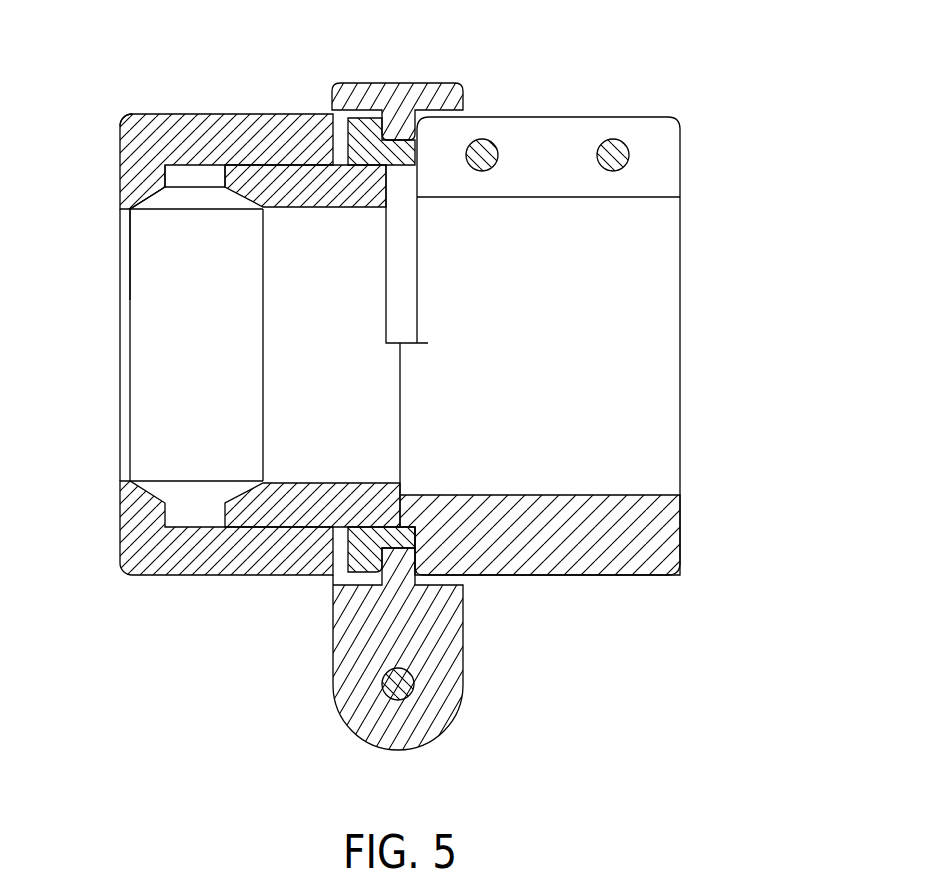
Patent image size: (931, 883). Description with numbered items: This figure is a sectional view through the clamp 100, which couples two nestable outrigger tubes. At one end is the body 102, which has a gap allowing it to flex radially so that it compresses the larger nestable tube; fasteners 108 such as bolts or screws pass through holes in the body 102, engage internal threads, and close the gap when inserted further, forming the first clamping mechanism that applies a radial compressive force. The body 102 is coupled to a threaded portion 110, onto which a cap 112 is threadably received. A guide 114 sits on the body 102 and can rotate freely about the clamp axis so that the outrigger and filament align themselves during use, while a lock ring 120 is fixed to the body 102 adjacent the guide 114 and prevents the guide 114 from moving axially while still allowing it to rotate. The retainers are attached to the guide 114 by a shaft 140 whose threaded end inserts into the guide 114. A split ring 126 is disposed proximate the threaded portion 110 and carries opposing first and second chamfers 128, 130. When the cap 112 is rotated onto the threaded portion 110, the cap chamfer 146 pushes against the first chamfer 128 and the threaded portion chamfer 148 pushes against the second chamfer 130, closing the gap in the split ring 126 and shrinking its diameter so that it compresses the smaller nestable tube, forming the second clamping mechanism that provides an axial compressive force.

The clamp 100 is at (754, 119).
The body 102 is at (682, 404).
The fasteners 108 is at (480, 140).
The threaded portion 110 is at (287, 190).
The cap 112 is at (120, 118).
The guide 114 is at (452, 83).
The lock ring 120 is at (360, 125).
The split ring 126 is at (153, 486).
The first chamfer 128 is at (128, 197).
The second chamfer 130 is at (232, 192).
The shaft 140 is at (413, 681).
The cap chamfer 146 is at (137, 192).
The threaded portion chamfer 148 is at (260, 213).